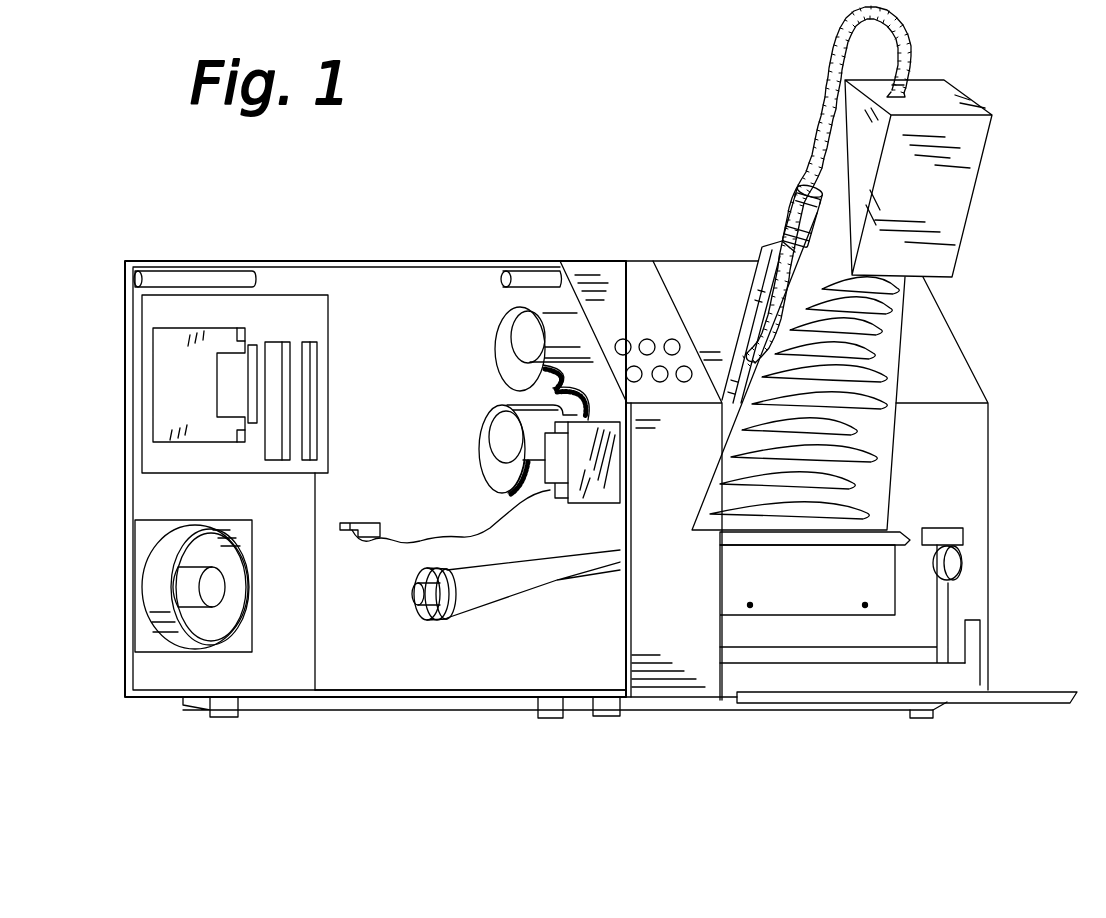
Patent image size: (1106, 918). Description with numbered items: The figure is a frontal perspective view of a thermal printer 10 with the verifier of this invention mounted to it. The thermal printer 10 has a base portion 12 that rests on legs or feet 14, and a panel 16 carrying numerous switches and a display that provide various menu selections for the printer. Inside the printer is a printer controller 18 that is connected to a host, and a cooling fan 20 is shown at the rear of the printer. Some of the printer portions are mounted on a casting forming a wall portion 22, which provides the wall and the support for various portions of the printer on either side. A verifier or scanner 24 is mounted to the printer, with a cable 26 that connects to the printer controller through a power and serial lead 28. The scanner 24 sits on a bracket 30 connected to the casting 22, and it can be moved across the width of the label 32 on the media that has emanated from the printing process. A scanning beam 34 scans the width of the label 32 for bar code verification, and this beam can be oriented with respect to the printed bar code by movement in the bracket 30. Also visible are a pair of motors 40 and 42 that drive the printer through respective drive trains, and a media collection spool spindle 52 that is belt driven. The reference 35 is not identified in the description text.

The thermal printer 10 is at (503, 735).
The base portion 12 is at (273, 697).
The legs or feet 14 is at (920, 718).
The panel 16 is at (623, 272).
The printer controller 18 is at (290, 310).
The cooling fan 20 is at (137, 588).
The wall portion 22 is at (353, 660).
The verifier or scanner 24 is at (953, 200).
The cable 26 is at (817, 147).
The power and serial lead 28 is at (392, 540).
The bracket 30 is at (750, 293).
The label 32 is at (815, 583).
The scanning beam 34 is at (900, 360).
The switch 35 is at (712, 353).
The motor 40 is at (527, 323).
The motor 42 is at (503, 413).
The media collection spool spindle 52 is at (437, 612).